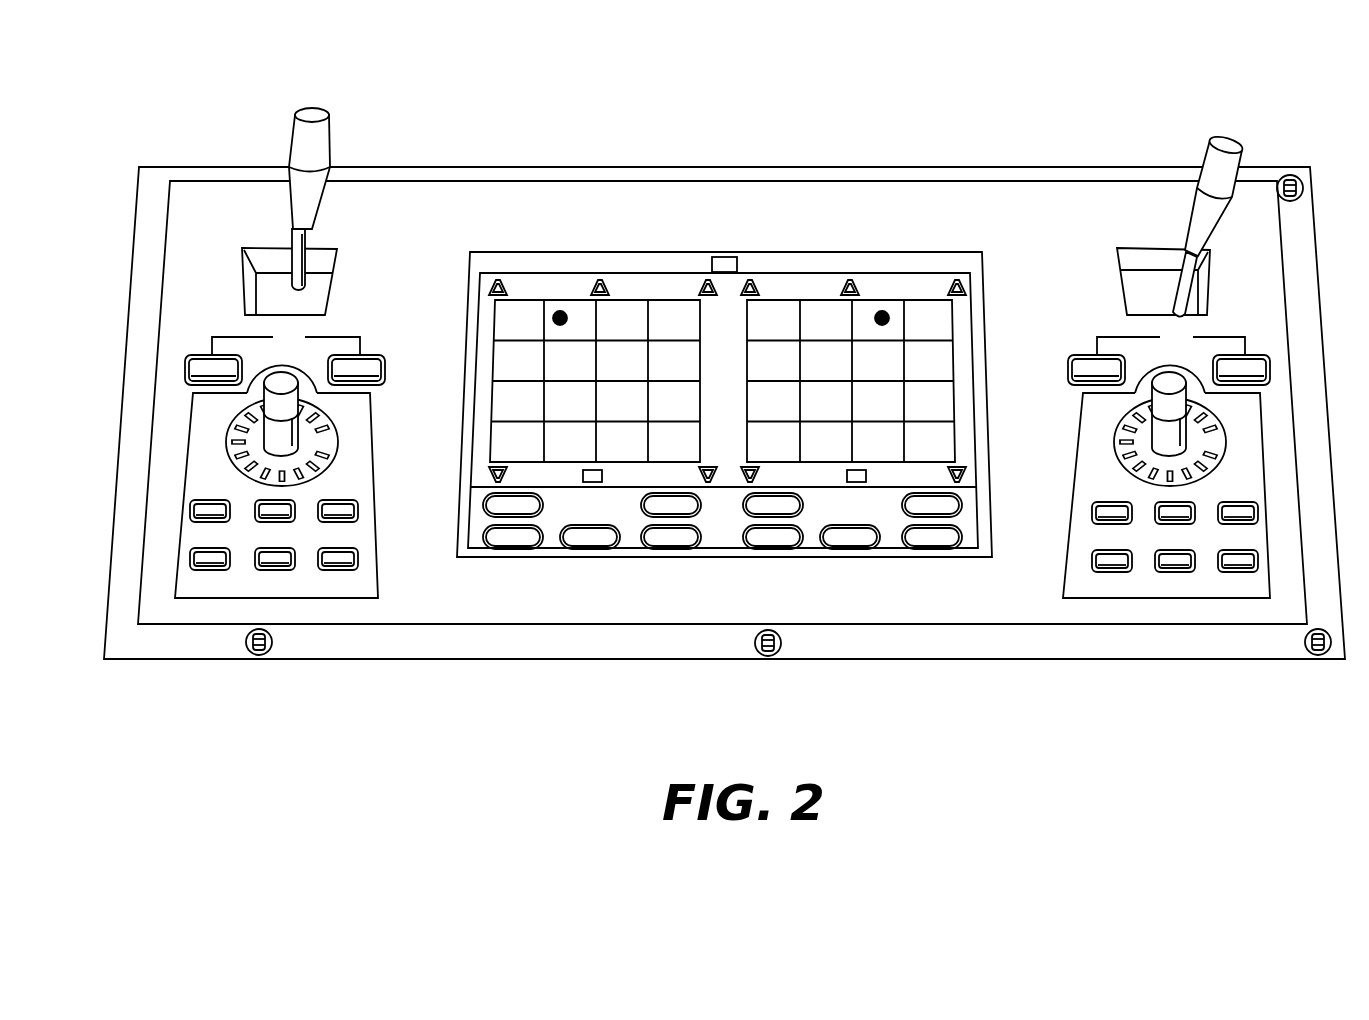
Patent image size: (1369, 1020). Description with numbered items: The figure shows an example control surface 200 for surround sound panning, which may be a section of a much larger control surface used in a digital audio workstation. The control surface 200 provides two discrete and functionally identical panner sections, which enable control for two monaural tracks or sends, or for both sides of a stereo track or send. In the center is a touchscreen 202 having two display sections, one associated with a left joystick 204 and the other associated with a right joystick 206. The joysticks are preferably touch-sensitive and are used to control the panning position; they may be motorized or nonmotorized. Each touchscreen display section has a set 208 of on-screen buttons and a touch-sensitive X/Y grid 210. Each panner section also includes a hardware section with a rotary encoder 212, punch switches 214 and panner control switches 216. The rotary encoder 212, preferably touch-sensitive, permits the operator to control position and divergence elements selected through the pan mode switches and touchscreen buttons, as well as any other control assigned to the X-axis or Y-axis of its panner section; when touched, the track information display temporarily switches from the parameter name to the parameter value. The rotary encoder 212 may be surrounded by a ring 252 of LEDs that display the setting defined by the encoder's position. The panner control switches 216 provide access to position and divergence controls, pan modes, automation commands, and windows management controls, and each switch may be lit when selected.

The control surface 200 is at (737, 168).
The touchscreen 202 is at (724, 420).
The left joystick 204 is at (330, 113).
The right joystick 206 is at (1243, 145).
The set of on-screen buttons 208 is at (712, 570).
The touch-sensitive X/Y grid 210 is at (536, 328).
The rotary encoder 212 is at (257, 428).
The punch switches 214 is at (192, 356).
The panner control switches 216 is at (185, 497).
The ring of LEDs 252 is at (228, 442).